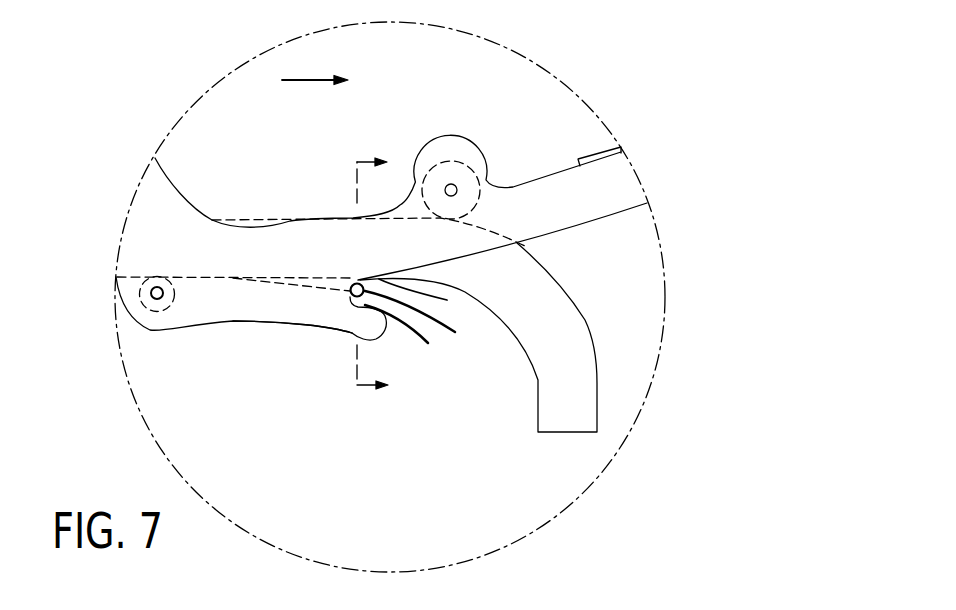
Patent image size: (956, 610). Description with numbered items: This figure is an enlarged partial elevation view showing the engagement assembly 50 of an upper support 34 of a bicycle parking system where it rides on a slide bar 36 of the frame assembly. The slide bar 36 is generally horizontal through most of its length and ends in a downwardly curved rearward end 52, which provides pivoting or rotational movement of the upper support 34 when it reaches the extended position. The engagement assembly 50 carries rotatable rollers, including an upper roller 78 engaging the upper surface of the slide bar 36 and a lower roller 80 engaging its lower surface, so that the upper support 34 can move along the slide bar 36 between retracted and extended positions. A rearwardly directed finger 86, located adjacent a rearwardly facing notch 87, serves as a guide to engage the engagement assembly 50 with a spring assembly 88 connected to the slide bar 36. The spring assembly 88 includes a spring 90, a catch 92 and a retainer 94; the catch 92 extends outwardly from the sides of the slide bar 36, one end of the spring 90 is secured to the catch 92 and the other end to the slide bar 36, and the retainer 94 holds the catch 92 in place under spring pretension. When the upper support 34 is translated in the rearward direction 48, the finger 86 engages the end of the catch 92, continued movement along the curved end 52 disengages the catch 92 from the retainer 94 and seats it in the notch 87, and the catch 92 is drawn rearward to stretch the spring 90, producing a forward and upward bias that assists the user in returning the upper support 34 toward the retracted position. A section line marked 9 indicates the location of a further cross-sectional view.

The section line 9- 9 is at (383, 272).
The upper support 34 is at (178, 208).
The slide bar 36 is at (260, 220).
The rearward direction 48 is at (307, 80).
The engagement assembly 50 is at (233, 362).
The downwardly curved rearward end 52 is at (513, 377).
The upper roller 78 is at (453, 153).
The lower roller 80 is at (153, 310).
The finger 86 is at (362, 323).
The notch 87 is at (406, 341).
The spring assembly 88 is at (277, 378).
The spring 90 is at (320, 288).
The catch 92 is at (426, 329).
The retainer 94 is at (429, 299).